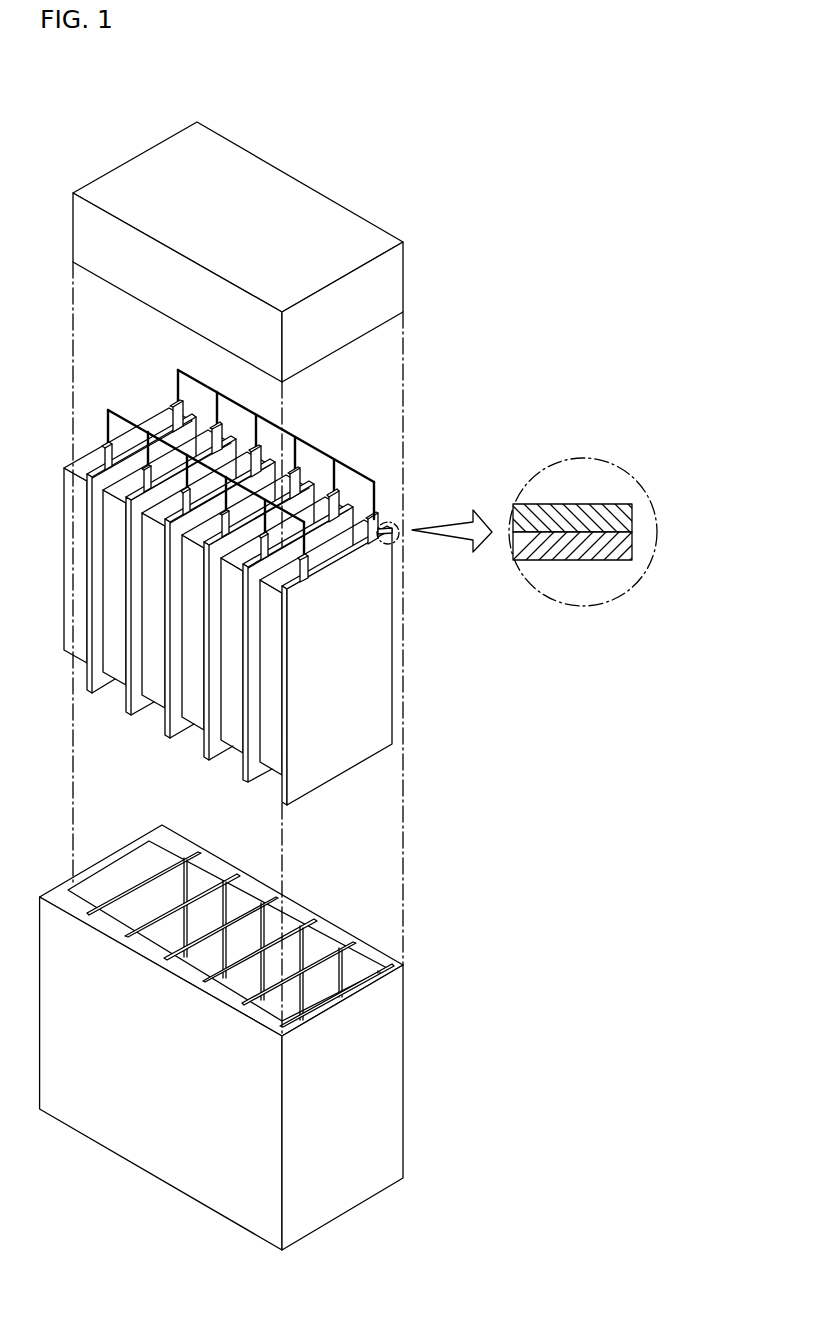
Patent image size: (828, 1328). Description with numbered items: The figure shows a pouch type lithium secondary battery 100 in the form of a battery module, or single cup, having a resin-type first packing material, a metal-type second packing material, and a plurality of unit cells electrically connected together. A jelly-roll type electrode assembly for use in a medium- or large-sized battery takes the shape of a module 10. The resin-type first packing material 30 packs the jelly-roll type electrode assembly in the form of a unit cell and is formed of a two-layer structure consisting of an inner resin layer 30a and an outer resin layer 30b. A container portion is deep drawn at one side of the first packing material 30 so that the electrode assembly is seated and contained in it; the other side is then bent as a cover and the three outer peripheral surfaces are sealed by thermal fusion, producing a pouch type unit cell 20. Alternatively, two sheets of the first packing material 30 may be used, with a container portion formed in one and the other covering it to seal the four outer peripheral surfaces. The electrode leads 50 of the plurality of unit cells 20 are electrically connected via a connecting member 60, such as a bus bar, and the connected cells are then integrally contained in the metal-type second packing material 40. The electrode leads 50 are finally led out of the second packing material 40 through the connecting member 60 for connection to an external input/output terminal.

The pouch type lithium secondary battery 100 is at (344, 150).
The module 10 is at (77, 702).
The pouch type unit cell 20 is at (255, 762).
The resin-type first packing material 30 is at (387, 647).
The inner resin layer 30a is at (632, 547).
The outer resin layer 30b is at (632, 517).
The metal-type second packing material 40 is at (387, 1080).
The electrode leads 50 is at (380, 518).
The connecting member 60 is at (340, 464).